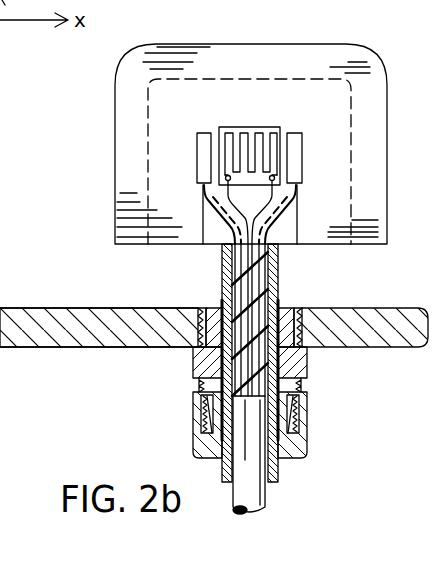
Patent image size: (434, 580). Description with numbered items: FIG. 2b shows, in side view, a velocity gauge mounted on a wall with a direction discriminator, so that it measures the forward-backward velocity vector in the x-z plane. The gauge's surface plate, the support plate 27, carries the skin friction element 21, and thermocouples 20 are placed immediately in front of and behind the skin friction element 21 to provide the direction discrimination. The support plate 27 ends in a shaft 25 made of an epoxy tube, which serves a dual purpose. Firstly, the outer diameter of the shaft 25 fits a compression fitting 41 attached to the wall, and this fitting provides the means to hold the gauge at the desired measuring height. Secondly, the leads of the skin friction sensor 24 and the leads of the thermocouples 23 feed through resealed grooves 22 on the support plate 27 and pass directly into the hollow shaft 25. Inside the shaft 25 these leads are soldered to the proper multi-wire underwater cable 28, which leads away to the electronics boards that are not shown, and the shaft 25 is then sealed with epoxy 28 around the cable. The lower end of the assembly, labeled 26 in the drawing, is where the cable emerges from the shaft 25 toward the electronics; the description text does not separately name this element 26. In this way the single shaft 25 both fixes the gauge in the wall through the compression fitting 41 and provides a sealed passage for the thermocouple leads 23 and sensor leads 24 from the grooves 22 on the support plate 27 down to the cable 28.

The thermocouples 20 is at (200, 132).
The skin friction element 21 is at (243, 125).
The grooves 22 is at (202, 246).
The thermocouple leads 23 is at (206, 190).
The skin friction sensor leads 24 is at (228, 215).
The shaft 25 is at (222, 290).
The cable 26 is at (266, 500).
The support plate 27 is at (325, 62).
The multi-wire underwater cable 28 is at (268, 276).
The compression fitting 41 is at (325, 410).